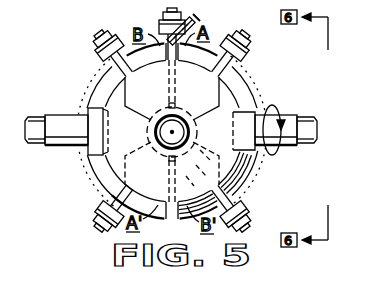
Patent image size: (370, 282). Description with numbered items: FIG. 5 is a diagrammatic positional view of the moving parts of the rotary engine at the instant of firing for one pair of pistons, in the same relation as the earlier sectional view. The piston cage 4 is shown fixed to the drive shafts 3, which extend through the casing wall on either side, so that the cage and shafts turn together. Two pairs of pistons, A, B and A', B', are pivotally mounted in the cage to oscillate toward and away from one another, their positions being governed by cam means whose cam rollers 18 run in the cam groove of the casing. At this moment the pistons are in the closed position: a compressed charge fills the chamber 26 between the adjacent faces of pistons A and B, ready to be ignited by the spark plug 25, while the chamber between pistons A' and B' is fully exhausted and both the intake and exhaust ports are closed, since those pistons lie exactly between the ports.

The drive shaft 3 is at (70, 122).
The piston cage 4 is at (244, 87).
The cam rollers 18 is at (94, 52).
The spark plug 25 is at (188, 22).
The chamber between the adjacent faces of the pistons 26 is at (176, 79).